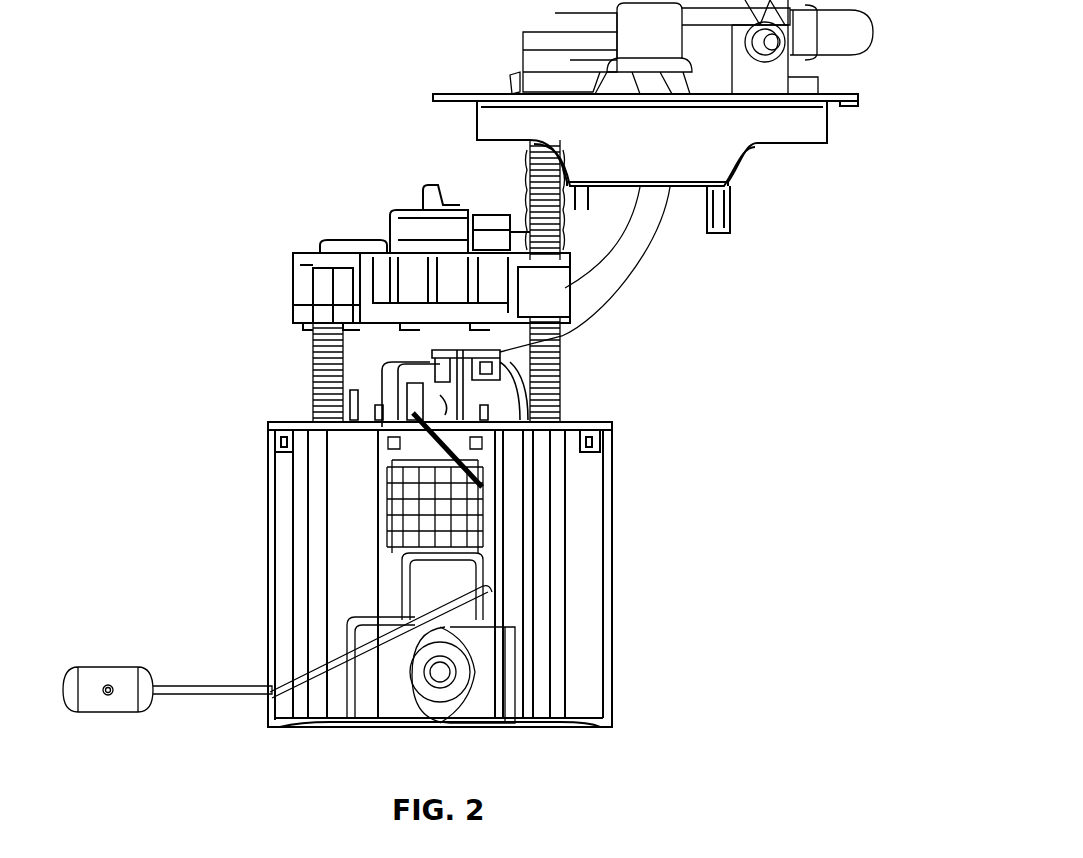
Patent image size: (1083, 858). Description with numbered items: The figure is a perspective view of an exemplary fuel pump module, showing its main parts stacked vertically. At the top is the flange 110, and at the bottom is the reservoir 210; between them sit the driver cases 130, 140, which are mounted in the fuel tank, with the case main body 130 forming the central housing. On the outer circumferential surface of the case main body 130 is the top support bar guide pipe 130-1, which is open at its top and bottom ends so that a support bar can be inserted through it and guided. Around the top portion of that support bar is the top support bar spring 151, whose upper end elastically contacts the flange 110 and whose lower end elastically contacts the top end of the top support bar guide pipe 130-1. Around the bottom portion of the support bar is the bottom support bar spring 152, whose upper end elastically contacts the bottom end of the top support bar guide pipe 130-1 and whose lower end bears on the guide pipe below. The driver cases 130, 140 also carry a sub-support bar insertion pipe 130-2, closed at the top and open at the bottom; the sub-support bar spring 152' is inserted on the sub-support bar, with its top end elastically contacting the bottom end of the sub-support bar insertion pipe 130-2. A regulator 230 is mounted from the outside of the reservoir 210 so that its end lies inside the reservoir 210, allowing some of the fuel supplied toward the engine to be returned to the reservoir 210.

The flange 110 is at (852, 105).
The case main body 130 is at (431, 243).
The driver case 140 is at (370, 190).
The top support bar guide pipe 130-1 is at (560, 283).
The sub-support bar insertion pipe 130-2 is at (322, 285).
The top support bar spring 151 is at (530, 183).
The bottom support bar spring 152 is at (595, 370).
The sub-support bar spring 152' is at (279, 372).
The reservoir 210 is at (612, 533).
The regulator 230 is at (480, 670).